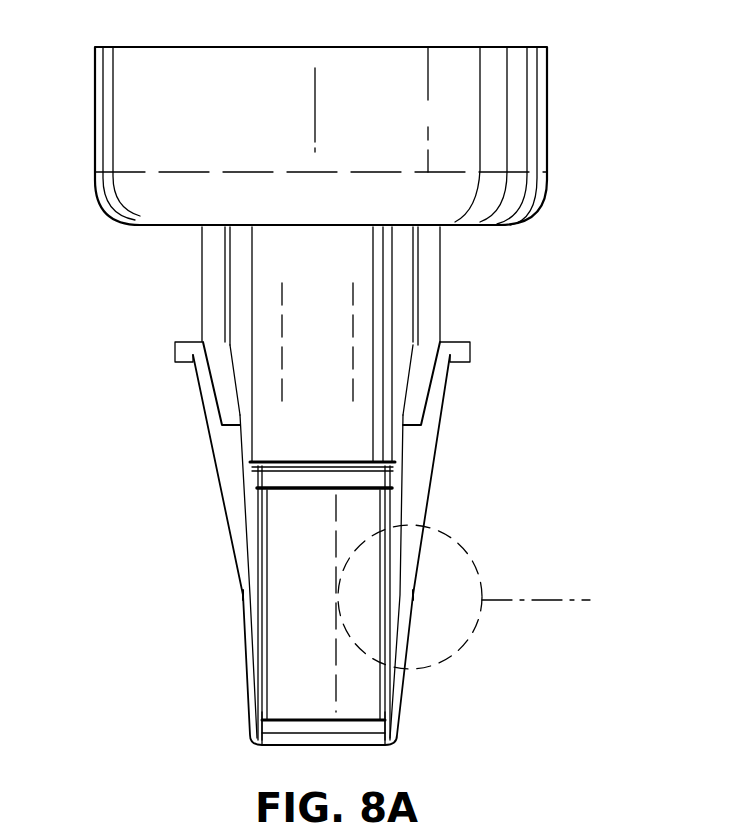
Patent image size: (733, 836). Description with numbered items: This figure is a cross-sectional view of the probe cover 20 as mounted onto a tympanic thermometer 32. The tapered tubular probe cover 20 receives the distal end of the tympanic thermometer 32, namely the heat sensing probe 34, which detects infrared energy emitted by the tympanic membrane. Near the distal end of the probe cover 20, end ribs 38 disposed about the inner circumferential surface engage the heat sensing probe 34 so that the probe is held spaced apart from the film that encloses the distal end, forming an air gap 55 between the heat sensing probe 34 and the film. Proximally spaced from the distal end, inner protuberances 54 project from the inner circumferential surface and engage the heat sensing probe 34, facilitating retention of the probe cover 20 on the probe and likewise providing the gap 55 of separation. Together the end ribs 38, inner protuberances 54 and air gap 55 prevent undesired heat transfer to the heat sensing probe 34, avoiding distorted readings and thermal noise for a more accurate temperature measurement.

The probe cover 20 is at (268, 712).
The tympanic thermometer 32 is at (280, 128).
The heat sensing probe 34 is at (290, 555).
The end ribs 38 is at (262, 705).
The inner protuberances 54 is at (405, 588).
The air gap 55 is at (395, 475).